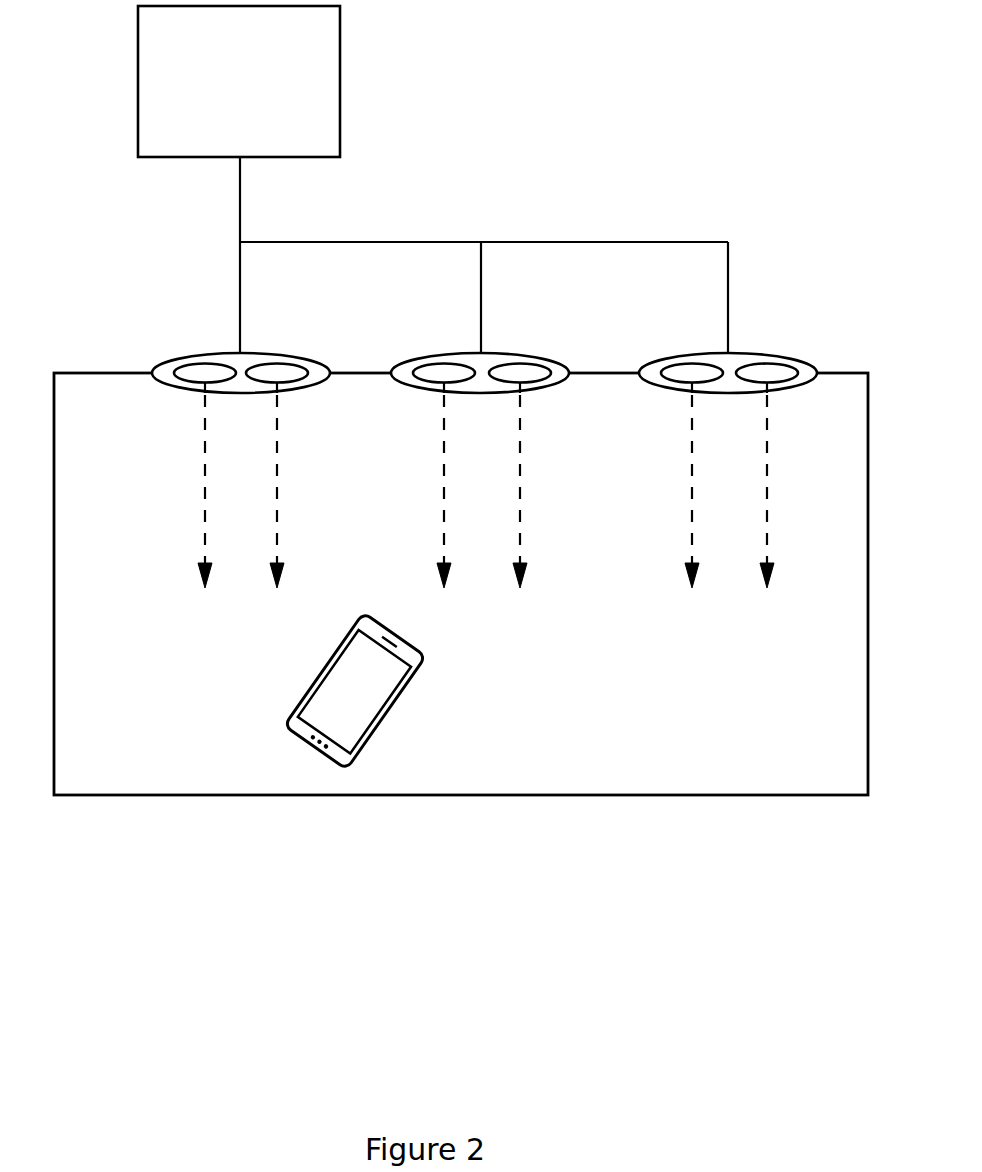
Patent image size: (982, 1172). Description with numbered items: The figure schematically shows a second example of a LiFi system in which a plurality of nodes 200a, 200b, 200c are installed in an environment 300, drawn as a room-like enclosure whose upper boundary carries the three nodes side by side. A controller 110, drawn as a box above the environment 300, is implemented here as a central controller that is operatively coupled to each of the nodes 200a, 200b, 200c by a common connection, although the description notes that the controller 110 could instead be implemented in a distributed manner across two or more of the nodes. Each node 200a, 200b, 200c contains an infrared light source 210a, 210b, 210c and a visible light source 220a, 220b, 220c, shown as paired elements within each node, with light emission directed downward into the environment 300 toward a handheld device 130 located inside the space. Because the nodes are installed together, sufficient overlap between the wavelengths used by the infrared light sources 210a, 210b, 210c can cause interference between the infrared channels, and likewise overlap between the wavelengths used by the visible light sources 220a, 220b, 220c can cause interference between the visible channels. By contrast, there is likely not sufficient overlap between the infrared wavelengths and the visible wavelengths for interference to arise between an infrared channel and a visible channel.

The controller 110 is at (153, 160).
The environment 300 is at (75, 372).
The node 200a is at (182, 394).
The node 200b is at (421, 394).
The node 200c is at (669, 394).
The infrared light source 210a is at (200, 364).
The infrared light source 210b is at (440, 364).
The infrared light source 210c is at (688, 364).
The visible light source 220a is at (288, 365).
The visible light source 220b is at (528, 365).
The visible light source 220c is at (776, 365).
The mobile device 130 is at (317, 675).